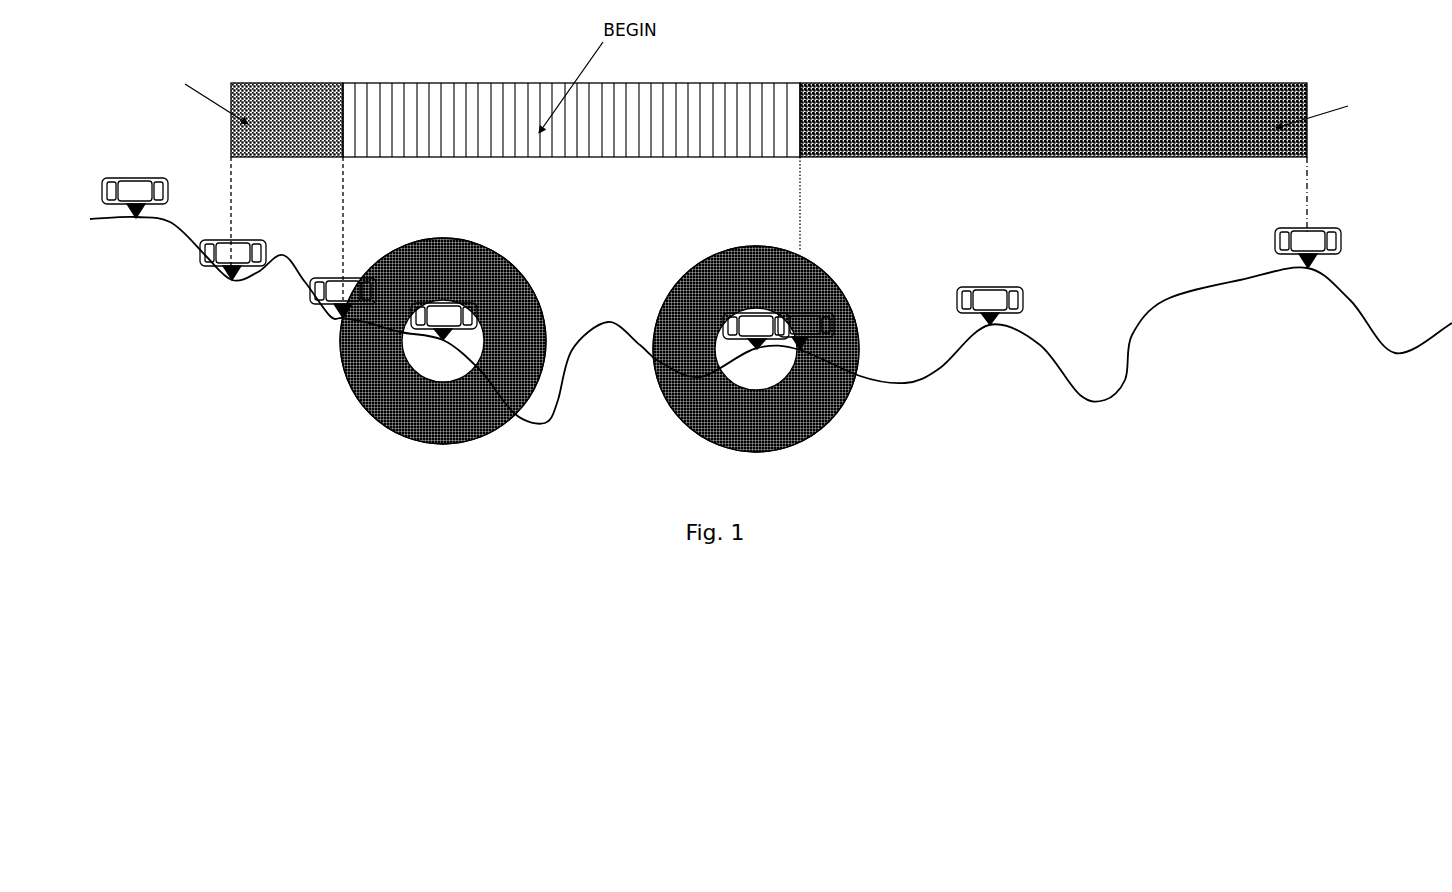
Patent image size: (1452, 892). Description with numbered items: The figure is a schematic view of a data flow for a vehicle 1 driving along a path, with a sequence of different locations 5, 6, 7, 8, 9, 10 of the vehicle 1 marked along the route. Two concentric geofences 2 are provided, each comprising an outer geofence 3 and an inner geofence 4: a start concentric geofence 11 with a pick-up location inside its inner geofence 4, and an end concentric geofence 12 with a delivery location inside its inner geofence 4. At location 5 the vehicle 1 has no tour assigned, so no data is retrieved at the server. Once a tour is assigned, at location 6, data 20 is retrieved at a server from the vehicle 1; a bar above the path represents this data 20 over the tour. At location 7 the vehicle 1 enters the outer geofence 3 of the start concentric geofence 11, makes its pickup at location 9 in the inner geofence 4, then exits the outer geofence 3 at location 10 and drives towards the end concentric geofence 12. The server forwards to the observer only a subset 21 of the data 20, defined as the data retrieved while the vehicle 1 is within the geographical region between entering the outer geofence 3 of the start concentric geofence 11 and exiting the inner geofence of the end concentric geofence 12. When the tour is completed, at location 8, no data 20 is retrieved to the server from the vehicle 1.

The vehicle 1 is at (995, 273).
The concentric geofence 2 is at (527, 259).
The outer geofence 3 is at (502, 432).
The inner geofence 4 is at (430, 384).
The location (no tour is assigned) 5 is at (136, 221).
The location (tour is assigned) 6 is at (231, 283).
The location (enters outer geofence) 7 is at (341, 320).
The location (no tour is assigned) 8 is at (1305, 276).
The location (pick up) 9 is at (441, 343).
The location (exit outer geofence) 10 is at (828, 418).
The start concentric geofence 11 is at (548, 274).
The end concentric geofence 12 is at (860, 274).
The data 20 is at (1305, 55).
The subset of data 21 is at (345, 180).